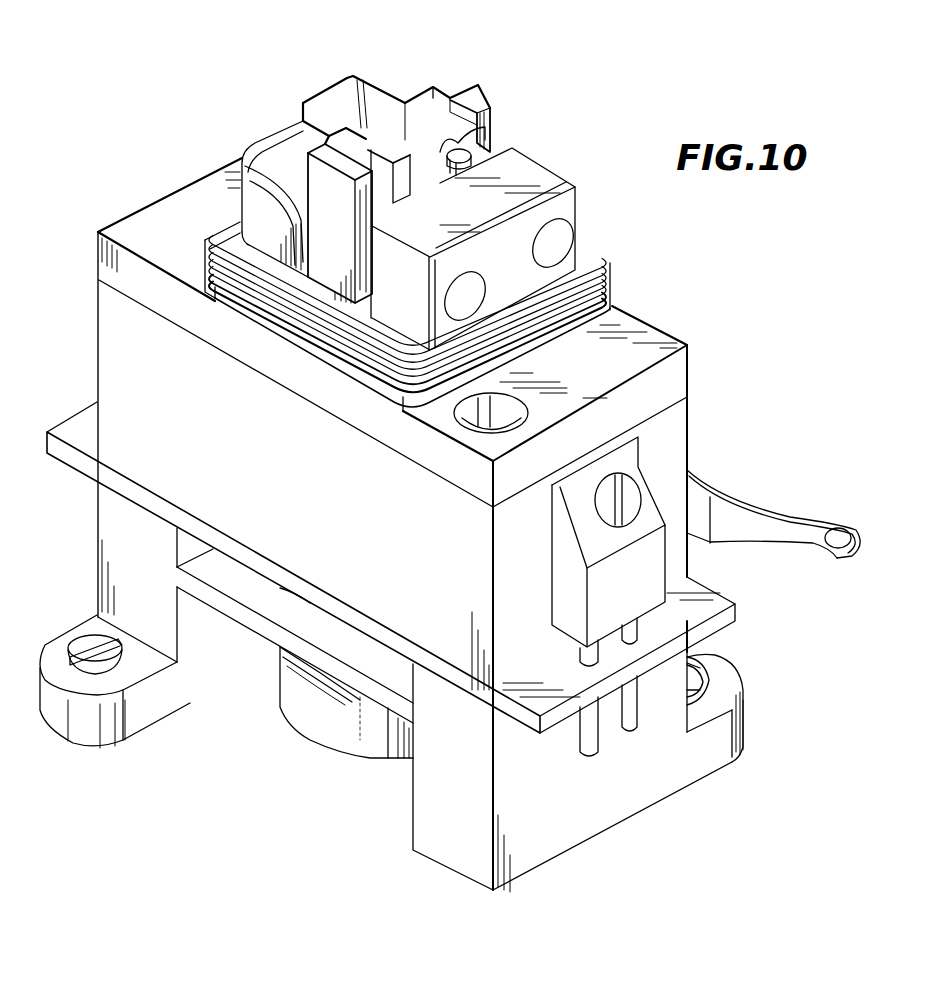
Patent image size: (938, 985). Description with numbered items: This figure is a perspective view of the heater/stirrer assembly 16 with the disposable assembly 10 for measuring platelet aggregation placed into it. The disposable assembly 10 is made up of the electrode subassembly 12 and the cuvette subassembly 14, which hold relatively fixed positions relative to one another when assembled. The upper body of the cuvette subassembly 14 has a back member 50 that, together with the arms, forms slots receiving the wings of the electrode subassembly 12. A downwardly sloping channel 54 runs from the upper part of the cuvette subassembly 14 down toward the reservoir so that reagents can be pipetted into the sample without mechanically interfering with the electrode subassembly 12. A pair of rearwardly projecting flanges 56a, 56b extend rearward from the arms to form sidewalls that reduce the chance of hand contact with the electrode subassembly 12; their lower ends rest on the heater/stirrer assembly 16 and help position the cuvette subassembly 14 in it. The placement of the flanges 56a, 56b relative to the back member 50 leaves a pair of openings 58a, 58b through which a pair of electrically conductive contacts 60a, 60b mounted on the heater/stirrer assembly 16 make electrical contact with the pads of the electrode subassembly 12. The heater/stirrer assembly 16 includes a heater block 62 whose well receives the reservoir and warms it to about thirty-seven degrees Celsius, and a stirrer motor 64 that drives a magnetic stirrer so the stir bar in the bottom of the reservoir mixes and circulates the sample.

The disposable assembly 10 is at (323, 83).
The electrode subassembly 12 is at (407, 104).
The cuvette subassembly 14 is at (300, 94).
The heater/stirrer assembly 16 is at (713, 300).
The back member 50 is at (449, 100).
The downwardly sloping channel 54 is at (340, 76).
The rearwardly projecting flange 56a is at (343, 187).
The rearwardly projecting flange 56b is at (497, 118).
The opening 58a is at (412, 196).
The opening 58b is at (465, 140).
The electrically conductive contact 60a is at (458, 156).
The electrically conductive contact 60b is at (367, 193).
The heater block 62 is at (610, 305).
The stirrer motor 64 is at (310, 707).